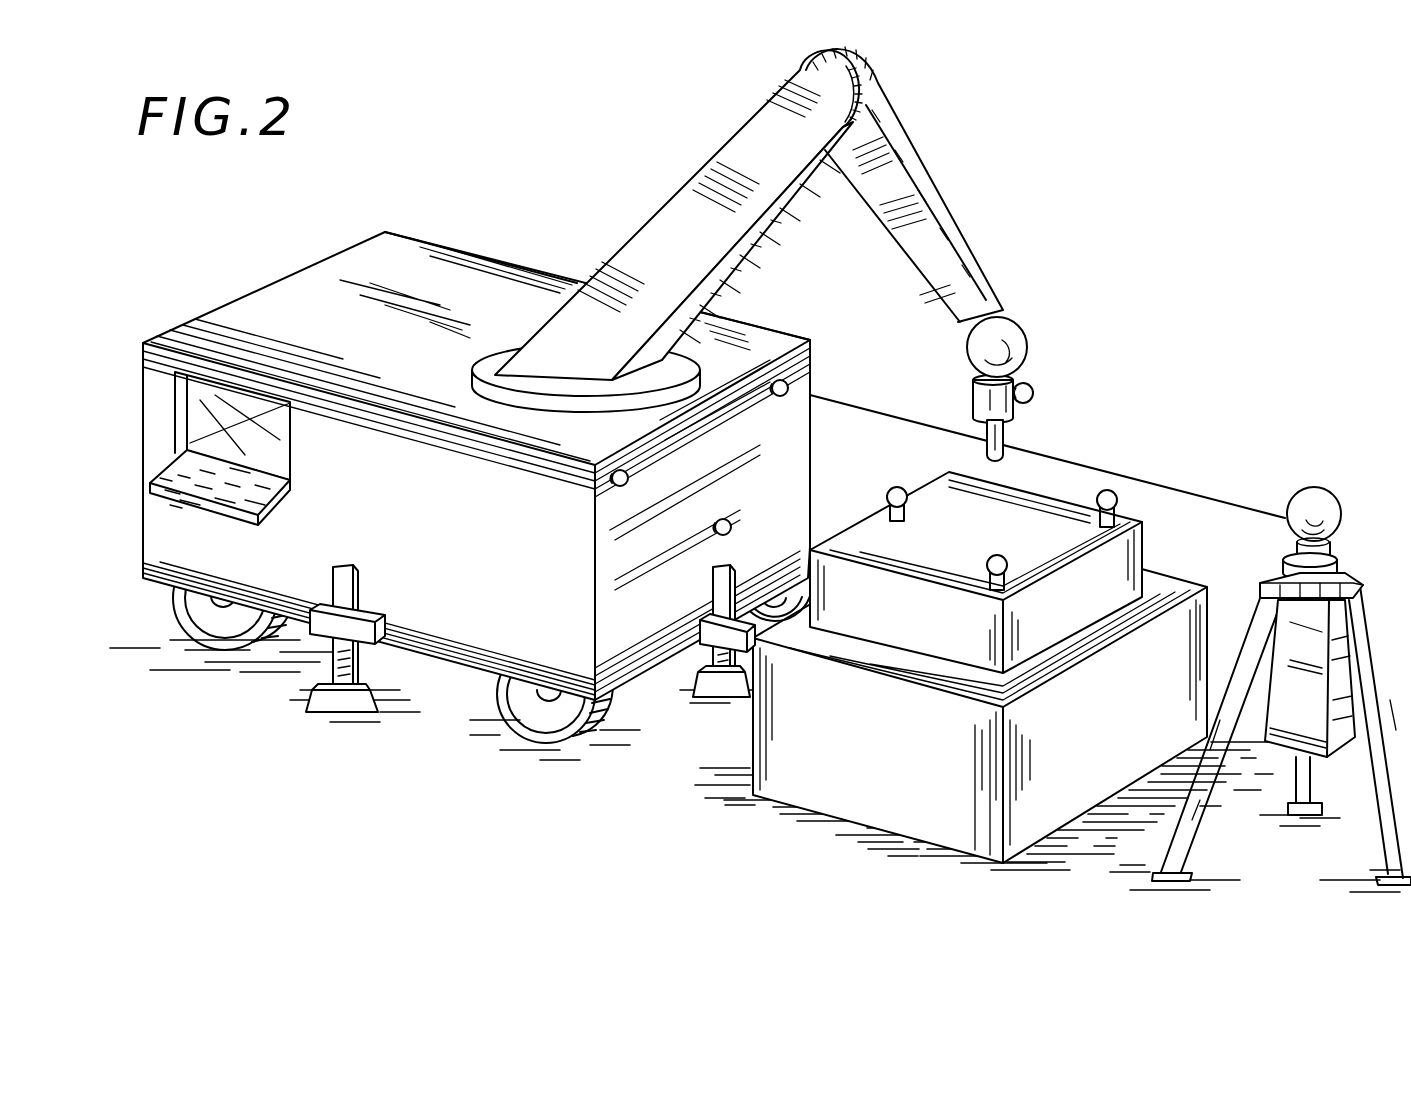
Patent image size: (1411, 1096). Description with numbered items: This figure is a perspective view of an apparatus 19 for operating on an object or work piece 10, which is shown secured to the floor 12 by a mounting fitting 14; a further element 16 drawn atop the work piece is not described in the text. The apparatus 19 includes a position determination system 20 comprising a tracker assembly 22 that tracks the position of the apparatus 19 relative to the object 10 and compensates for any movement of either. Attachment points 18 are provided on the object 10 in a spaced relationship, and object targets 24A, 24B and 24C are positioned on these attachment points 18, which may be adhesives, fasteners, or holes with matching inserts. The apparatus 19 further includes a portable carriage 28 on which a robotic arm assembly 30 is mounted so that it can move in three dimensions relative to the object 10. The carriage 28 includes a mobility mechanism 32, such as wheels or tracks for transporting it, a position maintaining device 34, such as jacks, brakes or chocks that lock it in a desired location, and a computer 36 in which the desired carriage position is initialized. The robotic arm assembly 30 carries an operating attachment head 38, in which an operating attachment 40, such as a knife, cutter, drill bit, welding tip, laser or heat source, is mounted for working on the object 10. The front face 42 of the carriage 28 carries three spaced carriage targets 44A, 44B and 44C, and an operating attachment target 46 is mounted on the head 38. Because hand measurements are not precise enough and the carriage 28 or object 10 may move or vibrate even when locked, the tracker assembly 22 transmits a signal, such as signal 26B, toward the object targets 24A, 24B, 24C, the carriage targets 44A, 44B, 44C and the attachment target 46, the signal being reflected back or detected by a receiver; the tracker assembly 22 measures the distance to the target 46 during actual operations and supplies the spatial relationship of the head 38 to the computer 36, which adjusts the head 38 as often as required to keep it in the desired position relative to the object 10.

The object or work piece 10 is at (978, 702).
The floor 12 is at (1200, 874).
The mounting fitting 14 is at (793, 767).
The part 16 is at (1008, 522).
The attachment points 18 is at (1029, 490).
The apparatus 19 is at (1165, 272).
The position determination system 20 is at (1281, 669).
The tracker assembly 22 is at (1322, 487).
The object target 24A is at (897, 486).
The object target 24B is at (990, 556).
The object target 24C is at (1115, 490).
The signal 26B is at (1213, 493).
The portable carriage 28 is at (283, 292).
The robotic arm assembly 30 is at (809, 254).
The mobility mechanism 32 is at (173, 620).
The position maintaining device 34 is at (336, 708).
The computer 36 is at (193, 413).
The operating attachment head 38 is at (970, 398).
The operating attachment 40 is at (1008, 442).
The front face 42 is at (480, 525).
The carriage target 44A is at (630, 480).
The carriage target 44B is at (790, 388).
The carriage target 44C is at (675, 573).
The operating attachment target 46 is at (1035, 393).